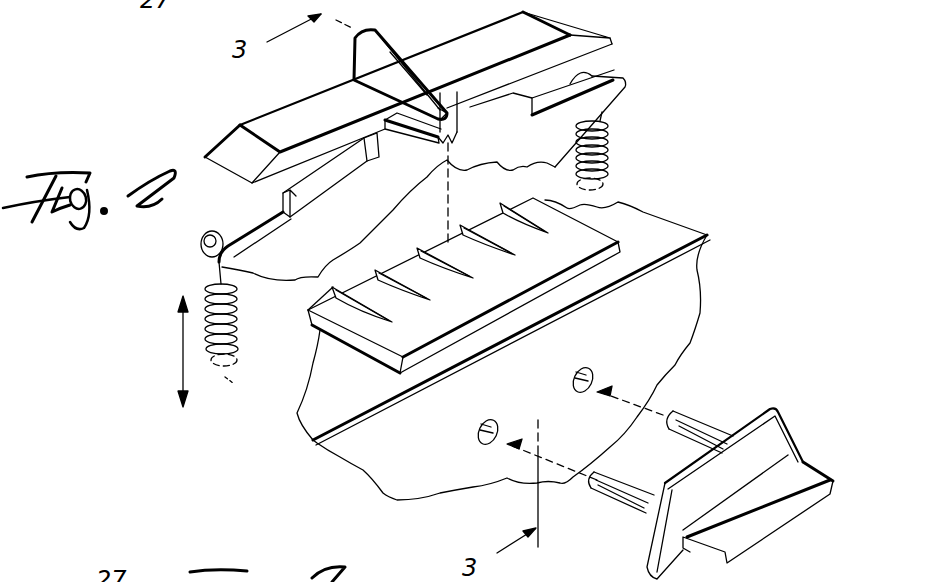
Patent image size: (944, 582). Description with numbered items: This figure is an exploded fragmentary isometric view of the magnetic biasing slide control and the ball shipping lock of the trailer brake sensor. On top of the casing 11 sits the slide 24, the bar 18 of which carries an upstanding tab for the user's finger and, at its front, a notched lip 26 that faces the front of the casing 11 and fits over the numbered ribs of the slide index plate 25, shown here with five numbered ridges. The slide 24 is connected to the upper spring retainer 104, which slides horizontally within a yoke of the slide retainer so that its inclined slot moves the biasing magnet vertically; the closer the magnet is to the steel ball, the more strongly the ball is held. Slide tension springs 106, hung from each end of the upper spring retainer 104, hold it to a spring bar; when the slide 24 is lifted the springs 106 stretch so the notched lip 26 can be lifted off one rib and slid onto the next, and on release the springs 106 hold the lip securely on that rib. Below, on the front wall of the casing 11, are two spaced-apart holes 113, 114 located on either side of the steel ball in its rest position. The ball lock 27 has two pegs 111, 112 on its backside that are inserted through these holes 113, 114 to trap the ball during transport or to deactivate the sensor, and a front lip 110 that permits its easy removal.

The casing 11 is at (683, 285).
The slide bar 18 is at (396, 91).
The slide 24 is at (399, 44).
The slide index plate 25 is at (593, 242).
The notched lip 26 is at (438, 134).
The ball lock 27 is at (807, 410).
The upper spring retainer 104 is at (622, 80).
The slide tension springs 106 is at (235, 335).
The front lip 110 is at (788, 518).
The peg 111 is at (697, 418).
The peg 112 is at (617, 507).
The hole 113 is at (597, 367).
The hole 114 is at (493, 420).